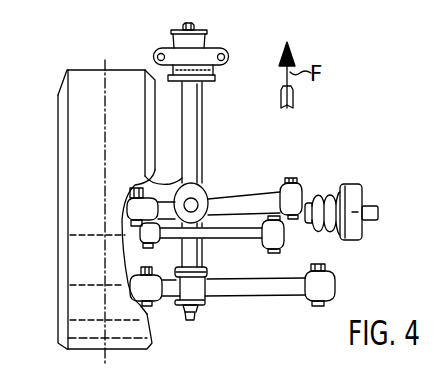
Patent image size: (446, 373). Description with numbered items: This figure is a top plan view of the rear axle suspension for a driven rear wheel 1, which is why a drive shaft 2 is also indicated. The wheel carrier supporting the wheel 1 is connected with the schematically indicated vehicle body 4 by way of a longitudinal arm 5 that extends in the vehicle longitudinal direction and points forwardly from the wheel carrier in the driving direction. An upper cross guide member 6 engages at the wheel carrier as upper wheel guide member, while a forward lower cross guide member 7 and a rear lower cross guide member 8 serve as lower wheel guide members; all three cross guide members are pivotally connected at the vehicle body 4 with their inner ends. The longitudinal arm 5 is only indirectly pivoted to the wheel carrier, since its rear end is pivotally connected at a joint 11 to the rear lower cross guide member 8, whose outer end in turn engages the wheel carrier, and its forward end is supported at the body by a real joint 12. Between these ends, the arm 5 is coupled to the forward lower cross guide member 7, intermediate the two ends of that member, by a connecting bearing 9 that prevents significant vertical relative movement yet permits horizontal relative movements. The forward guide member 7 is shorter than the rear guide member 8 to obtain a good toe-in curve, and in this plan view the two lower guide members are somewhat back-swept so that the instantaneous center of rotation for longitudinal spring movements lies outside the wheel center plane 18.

The rear wheel 1 is at (78, 80).
The wheel center plane 18 is at (108, 95).
The vehicle body 4 is at (212, 47).
The joint 12 is at (220, 72).
The longitudinal arm 5 is at (190, 141).
The connecting bearing 9 is at (205, 189).
The forward lower cross guide member 7 is at (258, 196).
The upper cross guide member 6 is at (235, 230).
The drive shaft 2 is at (352, 228).
The rear lower cross guide member 8 is at (270, 285).
The joint 11 is at (207, 298).